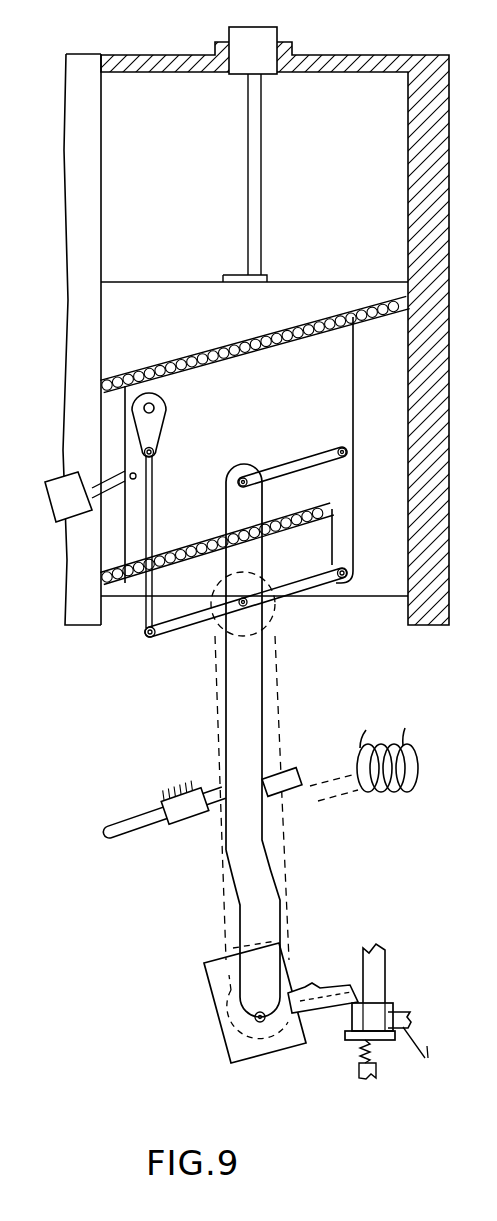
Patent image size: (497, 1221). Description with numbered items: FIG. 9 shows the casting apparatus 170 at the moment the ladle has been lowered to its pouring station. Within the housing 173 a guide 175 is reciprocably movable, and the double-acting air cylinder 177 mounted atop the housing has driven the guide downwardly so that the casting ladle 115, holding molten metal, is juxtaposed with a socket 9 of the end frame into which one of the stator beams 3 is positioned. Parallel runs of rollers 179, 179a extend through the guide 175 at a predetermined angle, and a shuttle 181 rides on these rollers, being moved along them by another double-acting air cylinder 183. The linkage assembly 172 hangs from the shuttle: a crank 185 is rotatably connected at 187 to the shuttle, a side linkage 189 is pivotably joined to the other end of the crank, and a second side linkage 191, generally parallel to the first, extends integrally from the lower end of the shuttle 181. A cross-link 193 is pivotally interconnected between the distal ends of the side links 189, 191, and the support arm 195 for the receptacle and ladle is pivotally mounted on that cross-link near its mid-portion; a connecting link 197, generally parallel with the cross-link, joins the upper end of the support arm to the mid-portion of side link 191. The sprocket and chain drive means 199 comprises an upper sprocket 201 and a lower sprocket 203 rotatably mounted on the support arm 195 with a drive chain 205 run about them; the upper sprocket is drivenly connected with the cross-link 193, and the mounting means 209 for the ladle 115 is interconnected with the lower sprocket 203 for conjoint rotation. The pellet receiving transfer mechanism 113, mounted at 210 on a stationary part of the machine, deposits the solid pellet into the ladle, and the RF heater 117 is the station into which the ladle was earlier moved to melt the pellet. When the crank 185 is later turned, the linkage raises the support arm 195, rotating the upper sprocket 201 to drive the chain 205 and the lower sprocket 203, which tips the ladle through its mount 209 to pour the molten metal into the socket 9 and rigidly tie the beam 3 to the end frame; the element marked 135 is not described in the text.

The apparatus 170 is at (147, 54).
The housing 173 is at (420, 70).
The double-acting air cylinder 177 is at (271, 40).
The guide 175 is at (153, 300).
The rollers 179 is at (184, 362).
The rollers 179a is at (250, 527).
The shuttle 181 is at (312, 388).
The side linkage 191 is at (350, 552).
The crank 185 is at (160, 437).
The rotatable connection 187 is at (158, 408).
The side linkage 189 is at (155, 497).
The double-acting air cylinder 183 is at (62, 484).
The support arm 195 is at (232, 707).
The connecting link 197 is at (290, 466).
The upper sprocket 201 is at (270, 594).
The cross-link 193 is at (306, 590).
The drive chain 205 is at (285, 858).
The linkage assembly 172 is at (170, 640).
The sprocket and chain drive means 199 is at (208, 870).
The mounting 210 is at (176, 788).
The pellet receiving transfer mechanism 113 is at (285, 769).
The RF heater 117 is at (403, 737).
The mounting means 209 is at (233, 1062).
The lower sprocket 203 is at (269, 1042).
The casting ladle 115 is at (312, 989).
The beams 3 is at (373, 976).
The housing 135 is at (383, 1030).
The socket means 9 is at (400, 1013).